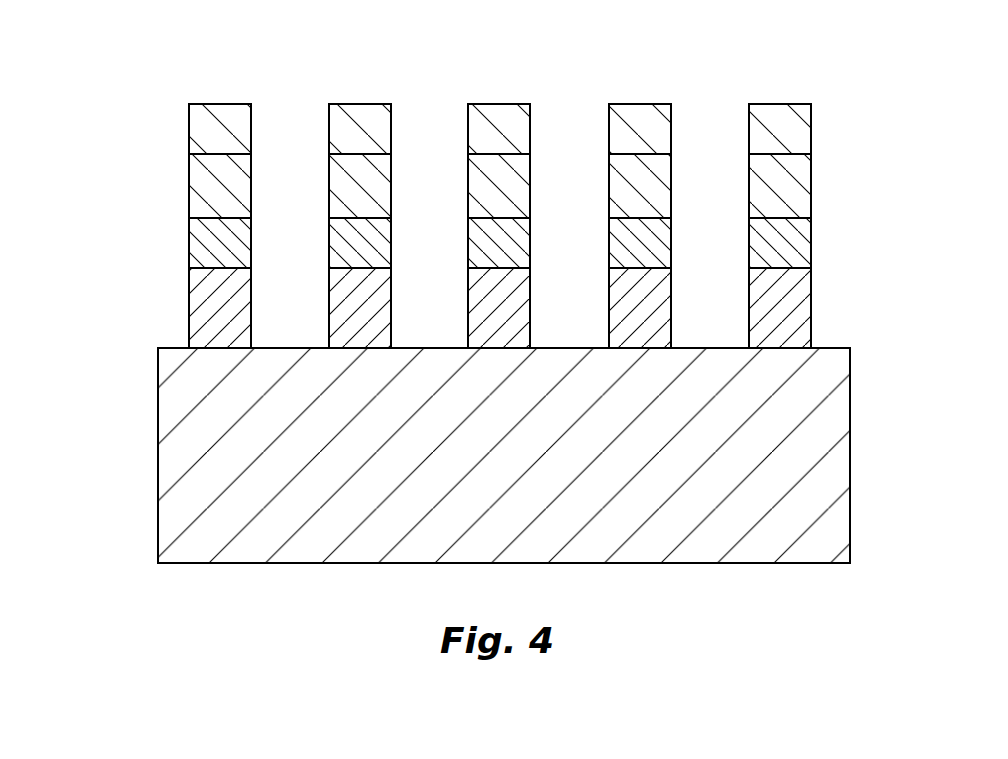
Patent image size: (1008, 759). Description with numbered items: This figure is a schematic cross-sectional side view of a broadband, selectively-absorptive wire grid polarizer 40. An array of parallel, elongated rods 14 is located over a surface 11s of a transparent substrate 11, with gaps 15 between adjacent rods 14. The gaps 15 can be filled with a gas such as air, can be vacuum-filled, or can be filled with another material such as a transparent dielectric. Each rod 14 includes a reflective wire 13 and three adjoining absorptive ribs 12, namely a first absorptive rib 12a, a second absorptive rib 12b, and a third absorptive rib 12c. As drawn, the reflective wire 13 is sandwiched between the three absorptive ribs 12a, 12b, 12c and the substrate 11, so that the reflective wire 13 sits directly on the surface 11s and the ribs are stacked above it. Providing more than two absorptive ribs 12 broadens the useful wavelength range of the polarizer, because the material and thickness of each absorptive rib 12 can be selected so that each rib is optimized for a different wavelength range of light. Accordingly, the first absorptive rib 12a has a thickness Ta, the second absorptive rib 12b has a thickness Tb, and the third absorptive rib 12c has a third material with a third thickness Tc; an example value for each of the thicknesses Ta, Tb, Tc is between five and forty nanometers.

The selectively-absorptive wire grid polarizer 40 is at (84, 483).
The transparent substrate 11 is at (530, 464).
The surface of the substrate 11s is at (833, 346).
The absorptive ribs 12 is at (473, 195).
The first absorptive rib 12a is at (164, 244).
The second absorptive rib 12b is at (180, 195).
The third absorptive rib 12c is at (457, 115).
The reflective wire 13 is at (180, 322).
The rods 14 is at (217, 68).
The gaps 15 is at (498, 257).
The thickness of the first absorptive rib Ta is at (443, 190).
The thickness of the second absorptive rib Tb is at (557, 126).
The third thickness Tc is at (304, 76).